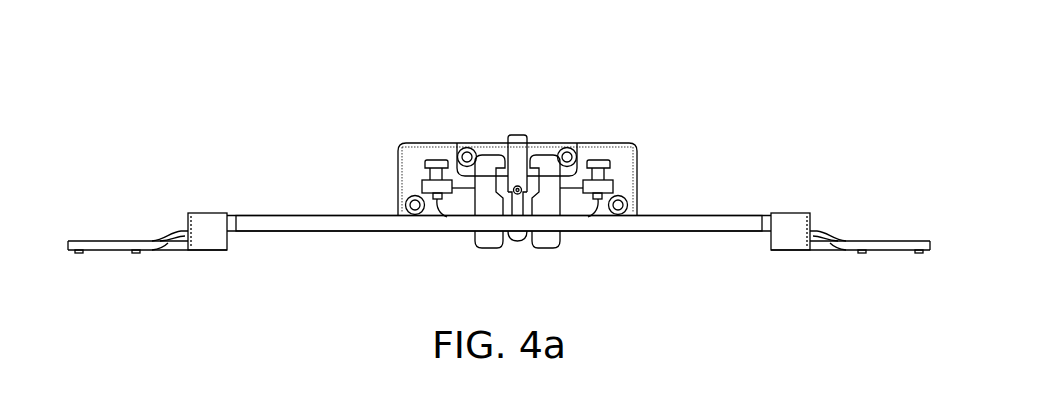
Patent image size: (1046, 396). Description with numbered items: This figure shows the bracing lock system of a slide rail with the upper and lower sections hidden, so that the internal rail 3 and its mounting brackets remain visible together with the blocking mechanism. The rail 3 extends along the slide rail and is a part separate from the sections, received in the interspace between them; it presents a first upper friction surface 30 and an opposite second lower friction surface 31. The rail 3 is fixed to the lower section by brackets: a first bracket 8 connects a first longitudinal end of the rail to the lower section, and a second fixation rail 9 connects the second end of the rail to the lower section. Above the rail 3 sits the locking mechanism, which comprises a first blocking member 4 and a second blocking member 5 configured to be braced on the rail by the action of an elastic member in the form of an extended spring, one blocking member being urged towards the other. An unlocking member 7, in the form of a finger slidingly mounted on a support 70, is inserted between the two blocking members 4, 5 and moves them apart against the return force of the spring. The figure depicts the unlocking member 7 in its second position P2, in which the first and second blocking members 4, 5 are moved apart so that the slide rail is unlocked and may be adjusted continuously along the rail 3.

The rail 3 is at (287, 223).
The first upper friction surface 30 is at (325, 216).
The second lower friction surface 31 is at (320, 231).
The first blocking member 4 is at (548, 248).
The second blocking member 5 is at (485, 248).
The unlocking member 7 is at (517, 135).
The support 70 is at (415, 148).
The first bracket 8 is at (102, 241).
The second fixation rail 9 is at (893, 241).
The second position P2 is at (505, 118).